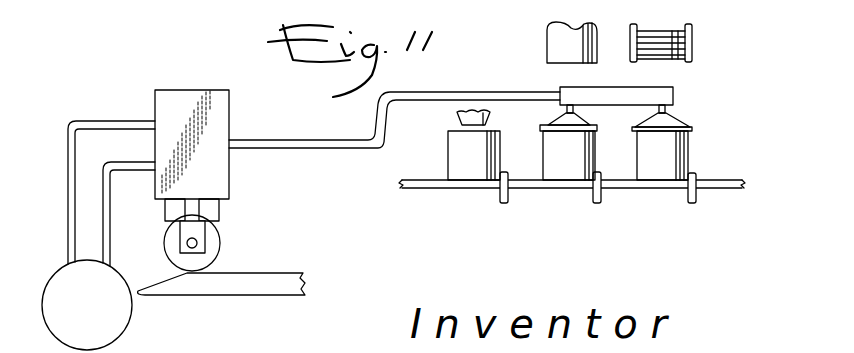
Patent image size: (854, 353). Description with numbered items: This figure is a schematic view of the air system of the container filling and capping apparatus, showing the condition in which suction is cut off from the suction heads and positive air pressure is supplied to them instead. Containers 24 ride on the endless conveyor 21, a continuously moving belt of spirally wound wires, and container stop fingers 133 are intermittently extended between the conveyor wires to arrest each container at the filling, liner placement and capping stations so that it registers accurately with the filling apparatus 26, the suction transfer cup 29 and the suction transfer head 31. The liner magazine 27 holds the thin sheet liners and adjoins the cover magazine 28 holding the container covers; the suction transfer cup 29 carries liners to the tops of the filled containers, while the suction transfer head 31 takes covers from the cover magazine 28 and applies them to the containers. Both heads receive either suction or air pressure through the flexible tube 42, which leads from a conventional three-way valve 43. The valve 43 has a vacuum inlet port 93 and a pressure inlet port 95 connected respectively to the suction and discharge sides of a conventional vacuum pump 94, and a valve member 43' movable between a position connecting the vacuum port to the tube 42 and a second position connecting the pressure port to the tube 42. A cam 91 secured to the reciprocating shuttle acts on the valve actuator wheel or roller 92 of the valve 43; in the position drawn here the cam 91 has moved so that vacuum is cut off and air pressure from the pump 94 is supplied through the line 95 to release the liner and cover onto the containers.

The endless conveyor 21 is at (423, 188).
The containers 24 is at (470, 168).
The filling apparatus 26 is at (457, 117).
The liner magazine 27 is at (557, 43).
The cover magazine 28 is at (692, 43).
The suction transfer cup 29 is at (565, 123).
The suction transfer head 31 is at (668, 121).
The flexible tube 42 is at (300, 138).
The three-way valve 43 is at (220, 144).
The valve member 43' is at (222, 210).
The cam 91 is at (157, 283).
The valve actuator wheel or roller 92 is at (210, 243).
The vacuum inlet port 93 is at (123, 120).
The vacuum pump 94 is at (112, 323).
The pressure inlet port 95 is at (110, 198).
The container stop fingers 133 is at (598, 203).